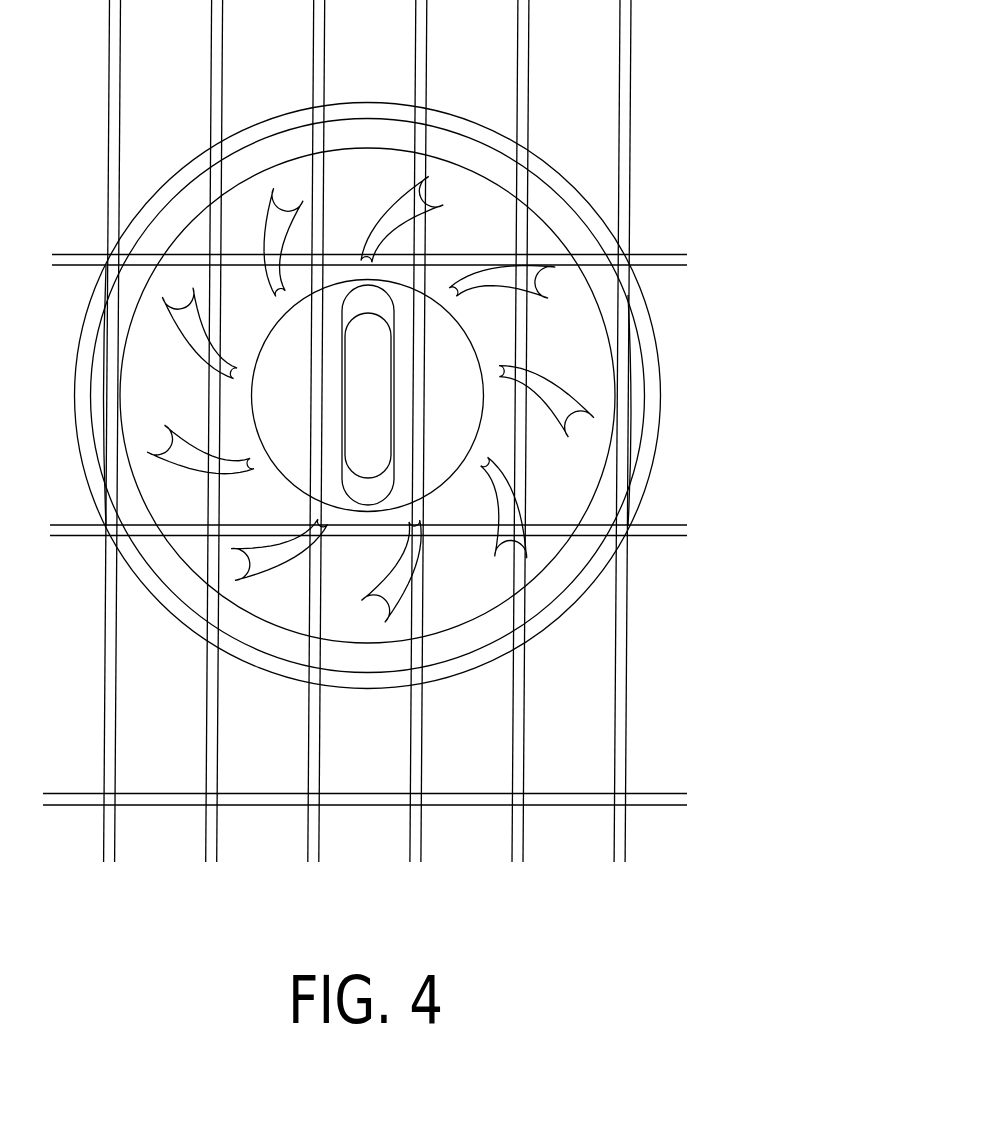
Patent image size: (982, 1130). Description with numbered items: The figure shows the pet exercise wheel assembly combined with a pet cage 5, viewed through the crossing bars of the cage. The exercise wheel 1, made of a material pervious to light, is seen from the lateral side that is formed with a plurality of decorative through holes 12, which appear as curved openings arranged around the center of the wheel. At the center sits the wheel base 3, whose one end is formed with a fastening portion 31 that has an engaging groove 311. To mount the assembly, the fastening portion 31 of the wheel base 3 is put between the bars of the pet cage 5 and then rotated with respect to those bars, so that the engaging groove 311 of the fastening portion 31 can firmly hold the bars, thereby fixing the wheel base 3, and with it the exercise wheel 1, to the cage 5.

The exercise wheel 1 is at (577, 588).
The wheel base 3 is at (447, 427).
The pet cage 5 is at (620, 697).
The decorative through holes 12 is at (550, 385).
The fastening portion 31 is at (378, 305).
The engaging groove 311 is at (395, 378).